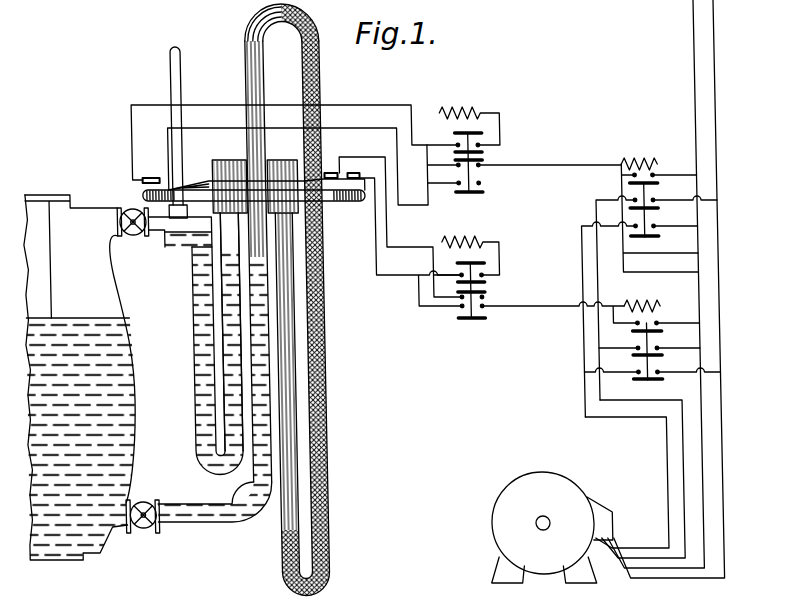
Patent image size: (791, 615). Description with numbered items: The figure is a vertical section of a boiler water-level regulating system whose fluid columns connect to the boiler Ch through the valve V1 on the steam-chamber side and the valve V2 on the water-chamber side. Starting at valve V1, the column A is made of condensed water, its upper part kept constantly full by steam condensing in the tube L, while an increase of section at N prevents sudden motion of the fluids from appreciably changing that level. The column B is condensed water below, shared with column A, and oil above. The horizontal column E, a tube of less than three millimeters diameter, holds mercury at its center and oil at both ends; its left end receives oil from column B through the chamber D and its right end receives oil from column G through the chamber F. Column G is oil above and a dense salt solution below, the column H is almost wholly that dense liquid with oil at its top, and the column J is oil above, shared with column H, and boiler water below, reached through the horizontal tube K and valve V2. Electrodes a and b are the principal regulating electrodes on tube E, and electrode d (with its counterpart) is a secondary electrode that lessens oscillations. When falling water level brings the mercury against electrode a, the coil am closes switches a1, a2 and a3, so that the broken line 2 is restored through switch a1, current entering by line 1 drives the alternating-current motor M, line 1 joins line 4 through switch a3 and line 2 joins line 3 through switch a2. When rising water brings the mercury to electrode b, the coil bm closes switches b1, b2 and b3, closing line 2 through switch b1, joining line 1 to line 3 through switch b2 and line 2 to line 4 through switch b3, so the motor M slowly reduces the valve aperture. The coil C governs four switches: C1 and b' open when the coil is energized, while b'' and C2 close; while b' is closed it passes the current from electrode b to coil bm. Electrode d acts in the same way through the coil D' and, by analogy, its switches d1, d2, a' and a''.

The line 1 is at (714, 52).
The line 2 is at (692, 50).
The line 3 is at (673, 473).
The line 4 is at (657, 523).
The motor M is at (523, 485).
The container Ch is at (80, 377).
The valve V1 is at (134, 237).
The valve V2 is at (143, 531).
The increase of section N is at (170, 248).
The tube L is at (181, 65).
The column A is at (186, 340).
The column B is at (214, 355).
The column J is at (259, 50).
The horizontal tube K is at (175, 506).
The column G is at (281, 378).
The column H is at (318, 85).
The chamber D is at (227, 171).
The chamber F is at (280, 158).
The horizontal column E is at (324, 200).
The principal regulating electrode a is at (393, 213).
The principal regulating electrode b is at (295, 144).
The secondary electrode d is at (352, 172).
The coil C is at (136, 191).
The switch C1 is at (480, 138).
The switch C2 is at (478, 184).
The switch b' is at (550, 176).
The switch b'' is at (497, 148).
The coil D' is at (470, 264).
The relay contact d1 is at (478, 268).
The relay contact d2 is at (477, 314).
The relay contact a' is at (507, 294).
The relay contact a'' is at (496, 282).
The coil bm is at (660, 202).
The coil am is at (572, 301).
The switch b1 is at (657, 205).
The switch b2 is at (658, 298).
The switch b3 is at (641, 319).
The switch a1 is at (666, 350).
The switch a2 is at (649, 358).
The switch a3 is at (652, 382).